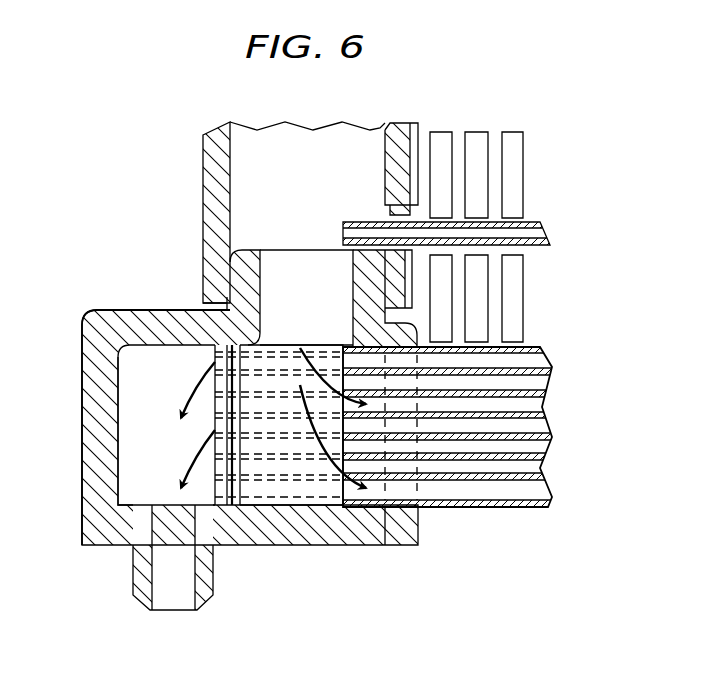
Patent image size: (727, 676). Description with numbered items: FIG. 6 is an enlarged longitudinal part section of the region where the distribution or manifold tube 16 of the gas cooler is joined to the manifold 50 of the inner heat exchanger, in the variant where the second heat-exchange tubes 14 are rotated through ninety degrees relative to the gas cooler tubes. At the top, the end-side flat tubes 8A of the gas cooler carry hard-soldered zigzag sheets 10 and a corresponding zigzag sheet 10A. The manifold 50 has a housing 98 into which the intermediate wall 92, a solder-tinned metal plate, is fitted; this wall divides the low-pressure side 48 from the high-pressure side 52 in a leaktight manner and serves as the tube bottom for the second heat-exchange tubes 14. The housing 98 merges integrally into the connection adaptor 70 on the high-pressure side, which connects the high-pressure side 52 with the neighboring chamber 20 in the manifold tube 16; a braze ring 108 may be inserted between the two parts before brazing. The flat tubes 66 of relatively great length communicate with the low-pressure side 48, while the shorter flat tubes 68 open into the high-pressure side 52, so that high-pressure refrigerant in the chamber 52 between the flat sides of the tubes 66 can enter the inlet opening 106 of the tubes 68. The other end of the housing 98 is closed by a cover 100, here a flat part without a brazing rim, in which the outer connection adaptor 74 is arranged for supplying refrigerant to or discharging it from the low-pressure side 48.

The distribution or manifold tube 16 is at (211, 135).
The chamber 20 is at (309, 199).
The connection adaptor 70 is at (233, 272).
The braze ring 108 is at (197, 312).
The housing 98 is at (93, 436).
The manifold 50 is at (88, 312).
The outer connection adaptor 74 is at (140, 585).
The cover 100 is at (318, 527).
The low-pressure side 48 is at (167, 449).
The intermediate wall 92 is at (236, 495).
The flat tubes 66 is at (280, 498).
The inlet opening 106 is at (343, 427).
The high-pressure side 52 is at (317, 305).
The flat tubes 8A is at (545, 238).
The zigzag sheets 10 is at (525, 163).
The zigzag sheet 10A is at (525, 303).
The second heat-exchange tubes 14 is at (537, 430).
The flat tubes 68 is at (505, 490).